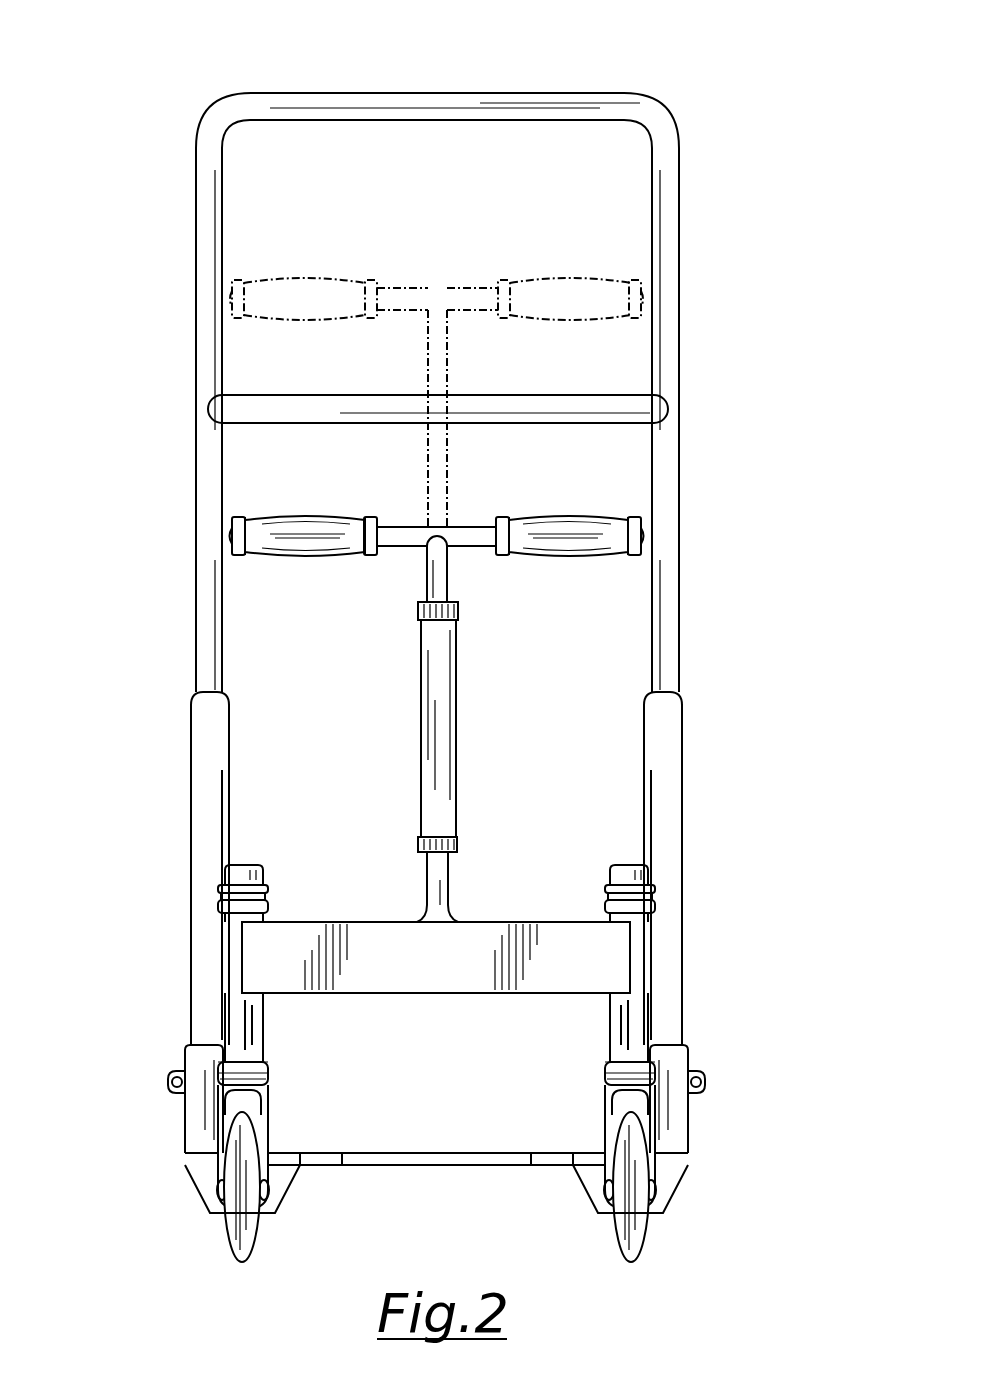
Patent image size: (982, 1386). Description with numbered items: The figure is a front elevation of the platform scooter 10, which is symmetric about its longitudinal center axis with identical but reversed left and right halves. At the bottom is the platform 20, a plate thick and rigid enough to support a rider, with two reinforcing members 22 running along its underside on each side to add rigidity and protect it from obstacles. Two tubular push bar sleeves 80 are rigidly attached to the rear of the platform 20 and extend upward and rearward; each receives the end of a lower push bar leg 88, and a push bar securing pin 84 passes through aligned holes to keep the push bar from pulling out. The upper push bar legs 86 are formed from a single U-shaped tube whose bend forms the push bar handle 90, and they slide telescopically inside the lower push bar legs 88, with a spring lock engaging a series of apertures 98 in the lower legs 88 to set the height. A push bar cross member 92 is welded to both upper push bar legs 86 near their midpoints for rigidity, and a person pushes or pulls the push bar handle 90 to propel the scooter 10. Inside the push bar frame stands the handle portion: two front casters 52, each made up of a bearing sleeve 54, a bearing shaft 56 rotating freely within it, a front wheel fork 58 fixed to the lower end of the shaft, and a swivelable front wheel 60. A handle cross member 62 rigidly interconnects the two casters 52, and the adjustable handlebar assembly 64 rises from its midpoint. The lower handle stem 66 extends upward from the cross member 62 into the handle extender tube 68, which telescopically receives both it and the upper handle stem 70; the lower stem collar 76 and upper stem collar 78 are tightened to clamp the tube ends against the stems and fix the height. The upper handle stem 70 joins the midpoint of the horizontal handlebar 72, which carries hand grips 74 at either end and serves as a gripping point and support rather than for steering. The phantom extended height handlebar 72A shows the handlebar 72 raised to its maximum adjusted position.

The platform scooter 10 is at (749, 119).
The platform 20 is at (432, 1153).
The reinforcing members 22 is at (285, 1185).
The front caster 52 is at (278, 1079).
The bearing sleeve 54 is at (218, 993).
The bearing shaft 56 is at (225, 878).
The front wheel fork 58 is at (220, 1110).
The front wheel 60 is at (240, 1213).
The handle cross member 62 is at (540, 922).
The adjustable handlebar assembly 64 is at (478, 629).
The lower handle stem 66 is at (428, 884).
The handle extender tube 68 is at (455, 718).
The upper handle stem 70 is at (428, 577).
The handlebar 72 is at (465, 527).
The phantom extended height handlebar 72A is at (466, 290).
The hand grips 74 is at (262, 520).
The lower stem collar 76 is at (420, 840).
The upper stem collar 78 is at (420, 613).
The push bar sleeves 80 is at (188, 1098).
The push bar securing pin 84 is at (175, 1073).
The upper push bar legs 86 is at (200, 211).
The lower push bar legs 88 is at (197, 784).
The push bar handle 90 is at (393, 92).
The push bar cross member 92 is at (365, 395).
The apertures 98 is at (191, 713).